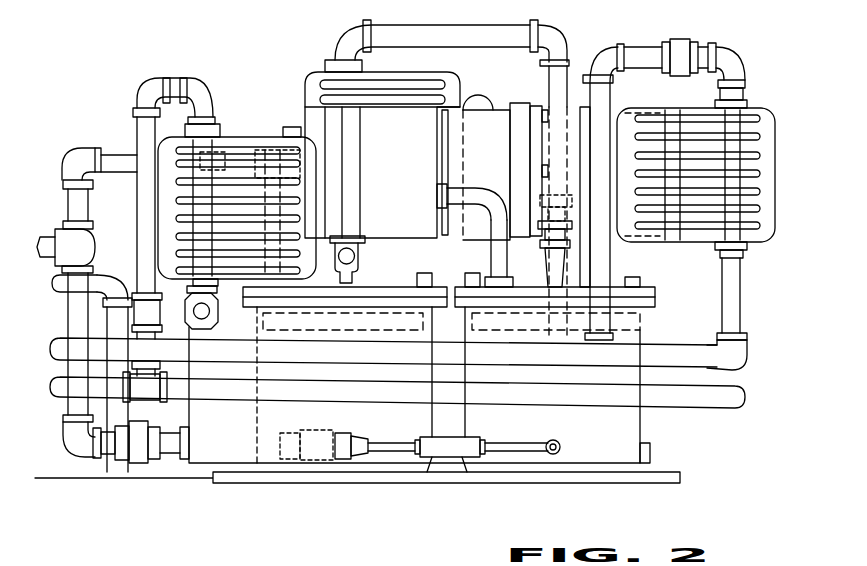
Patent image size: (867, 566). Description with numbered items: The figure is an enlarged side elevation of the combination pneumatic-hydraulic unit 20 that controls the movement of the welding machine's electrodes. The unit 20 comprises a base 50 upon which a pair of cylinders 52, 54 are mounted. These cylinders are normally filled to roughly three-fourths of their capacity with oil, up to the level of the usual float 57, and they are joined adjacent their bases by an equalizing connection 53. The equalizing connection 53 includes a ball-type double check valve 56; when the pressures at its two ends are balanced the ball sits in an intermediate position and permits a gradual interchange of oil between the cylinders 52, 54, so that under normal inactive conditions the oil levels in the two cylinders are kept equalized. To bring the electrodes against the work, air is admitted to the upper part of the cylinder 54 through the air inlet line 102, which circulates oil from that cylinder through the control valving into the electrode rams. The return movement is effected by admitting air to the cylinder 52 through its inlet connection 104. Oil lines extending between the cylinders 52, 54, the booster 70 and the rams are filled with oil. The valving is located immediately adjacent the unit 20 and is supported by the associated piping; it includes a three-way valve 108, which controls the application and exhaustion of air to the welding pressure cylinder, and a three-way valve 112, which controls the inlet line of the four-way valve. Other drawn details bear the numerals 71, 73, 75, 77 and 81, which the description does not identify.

The unit 20 is at (597, 35).
The base 50 is at (672, 483).
The cylinder 52 is at (405, 456).
The equalizing connection 53 is at (503, 450).
The cylinder 54 is at (592, 457).
The double check valve 56 is at (462, 437).
The float 57 is at (350, 322).
The booster 70 is at (506, 103).
The pipe section 71 is at (513, 243).
The pipe flange 73 is at (513, 264).
The compressor housing 75 is at (275, 228).
The valve 77 is at (262, 311).
The suction pipe 81 is at (482, 184).
The air inlet line 102 is at (460, 34).
The inlet connection 104 is at (360, 262).
The three-way valve 108 is at (757, 110).
The three-way valve 112 is at (242, 148).